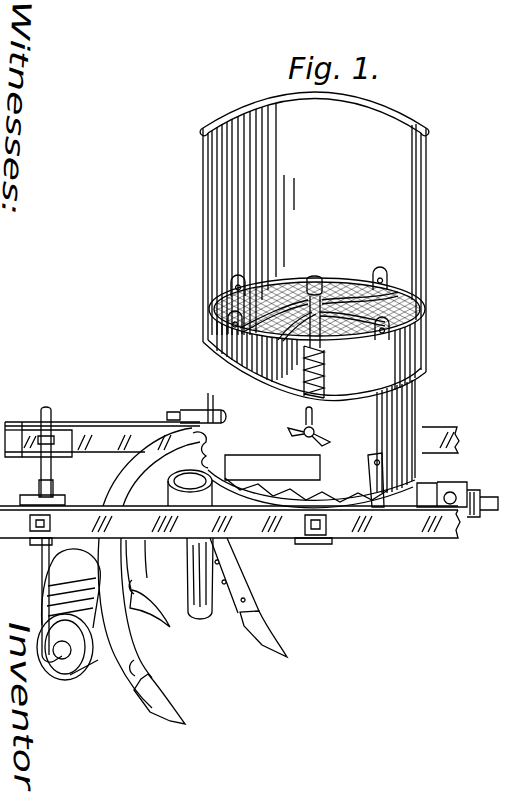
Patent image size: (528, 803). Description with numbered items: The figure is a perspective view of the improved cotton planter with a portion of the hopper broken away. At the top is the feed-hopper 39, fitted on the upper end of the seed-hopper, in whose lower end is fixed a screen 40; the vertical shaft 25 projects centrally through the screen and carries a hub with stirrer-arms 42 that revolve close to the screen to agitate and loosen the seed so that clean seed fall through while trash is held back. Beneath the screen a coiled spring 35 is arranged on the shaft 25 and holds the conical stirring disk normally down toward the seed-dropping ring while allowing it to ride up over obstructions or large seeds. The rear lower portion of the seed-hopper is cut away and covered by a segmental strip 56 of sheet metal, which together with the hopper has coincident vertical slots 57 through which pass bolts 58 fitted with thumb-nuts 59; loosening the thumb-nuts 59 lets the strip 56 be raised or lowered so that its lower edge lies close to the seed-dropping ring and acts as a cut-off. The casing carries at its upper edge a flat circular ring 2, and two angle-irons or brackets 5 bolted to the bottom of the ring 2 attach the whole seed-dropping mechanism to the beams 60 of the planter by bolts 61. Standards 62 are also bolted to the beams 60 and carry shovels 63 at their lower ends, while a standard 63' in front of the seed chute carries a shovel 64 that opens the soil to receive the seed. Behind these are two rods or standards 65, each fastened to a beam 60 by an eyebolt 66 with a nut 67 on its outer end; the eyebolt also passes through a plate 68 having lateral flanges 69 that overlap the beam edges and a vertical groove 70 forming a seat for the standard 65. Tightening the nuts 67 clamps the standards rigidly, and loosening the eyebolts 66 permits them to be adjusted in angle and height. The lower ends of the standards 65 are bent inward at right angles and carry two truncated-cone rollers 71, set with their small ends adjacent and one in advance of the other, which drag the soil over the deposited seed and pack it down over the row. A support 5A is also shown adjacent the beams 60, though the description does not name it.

The flat ring 2 is at (350, 497).
The angle-irons or brackets 5 is at (315, 544).
The auxiliary tooth 5A is at (190, 556).
The vertical shaft 25 is at (325, 290).
The coiled spring 35 is at (325, 376).
The feed-hopper 39 is at (306, 232).
The screen 40 is at (300, 292).
The stirrer-arms 42 is at (385, 290).
The segmental strip 56 is at (250, 466).
The vertical slots 57 is at (314, 428).
The bolts 58 is at (318, 434).
The thumb-nuts 59 is at (306, 428).
The beams 60 is at (110, 434).
The bolts 61 is at (312, 528).
The standards 62 is at (125, 665).
The shovels 63 is at (159, 642).
The standard 63' is at (253, 573).
The shovel 64 is at (262, 645).
The rods or standards 65 is at (42, 565).
The eyebolt 66 is at (40, 444).
The nut 67 is at (34, 536).
The plate 68 is at (62, 502).
The lateral flanges 69 is at (26, 526).
The groove 70 is at (52, 486).
The rollers 71 is at (68, 614).